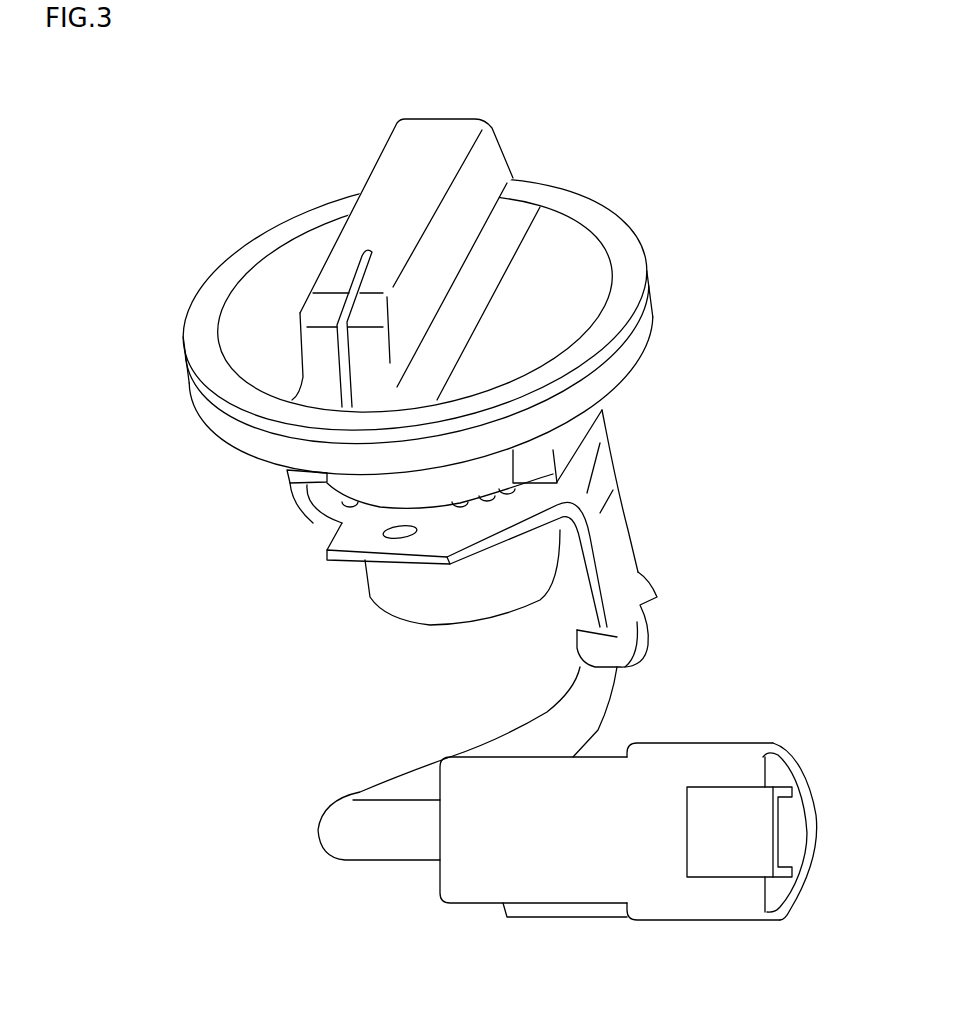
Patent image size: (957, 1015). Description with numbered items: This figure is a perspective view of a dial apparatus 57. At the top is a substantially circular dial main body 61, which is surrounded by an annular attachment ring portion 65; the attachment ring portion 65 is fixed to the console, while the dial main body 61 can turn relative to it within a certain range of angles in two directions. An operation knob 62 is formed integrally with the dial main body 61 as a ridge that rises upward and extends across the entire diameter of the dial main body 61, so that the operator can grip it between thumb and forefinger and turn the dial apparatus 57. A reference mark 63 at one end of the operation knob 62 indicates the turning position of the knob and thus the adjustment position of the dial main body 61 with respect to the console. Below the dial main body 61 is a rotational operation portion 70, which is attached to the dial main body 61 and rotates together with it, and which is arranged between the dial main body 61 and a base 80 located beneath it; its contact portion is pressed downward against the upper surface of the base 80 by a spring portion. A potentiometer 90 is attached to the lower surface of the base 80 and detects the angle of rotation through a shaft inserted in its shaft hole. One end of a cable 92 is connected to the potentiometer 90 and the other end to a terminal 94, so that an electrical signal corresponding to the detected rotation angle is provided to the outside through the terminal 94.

The dial apparatus 57 is at (204, 97).
The dial main body 61 is at (570, 240).
The operation knob 62 is at (388, 182).
The reference mark 63 is at (352, 270).
The attachment ring portion 65 is at (185, 318).
The rotational operation portion 70 is at (586, 438).
The base 80 is at (360, 537).
The potentiometer 90 is at (435, 603).
The cable 92 is at (600, 703).
The terminal 94 is at (800, 828).